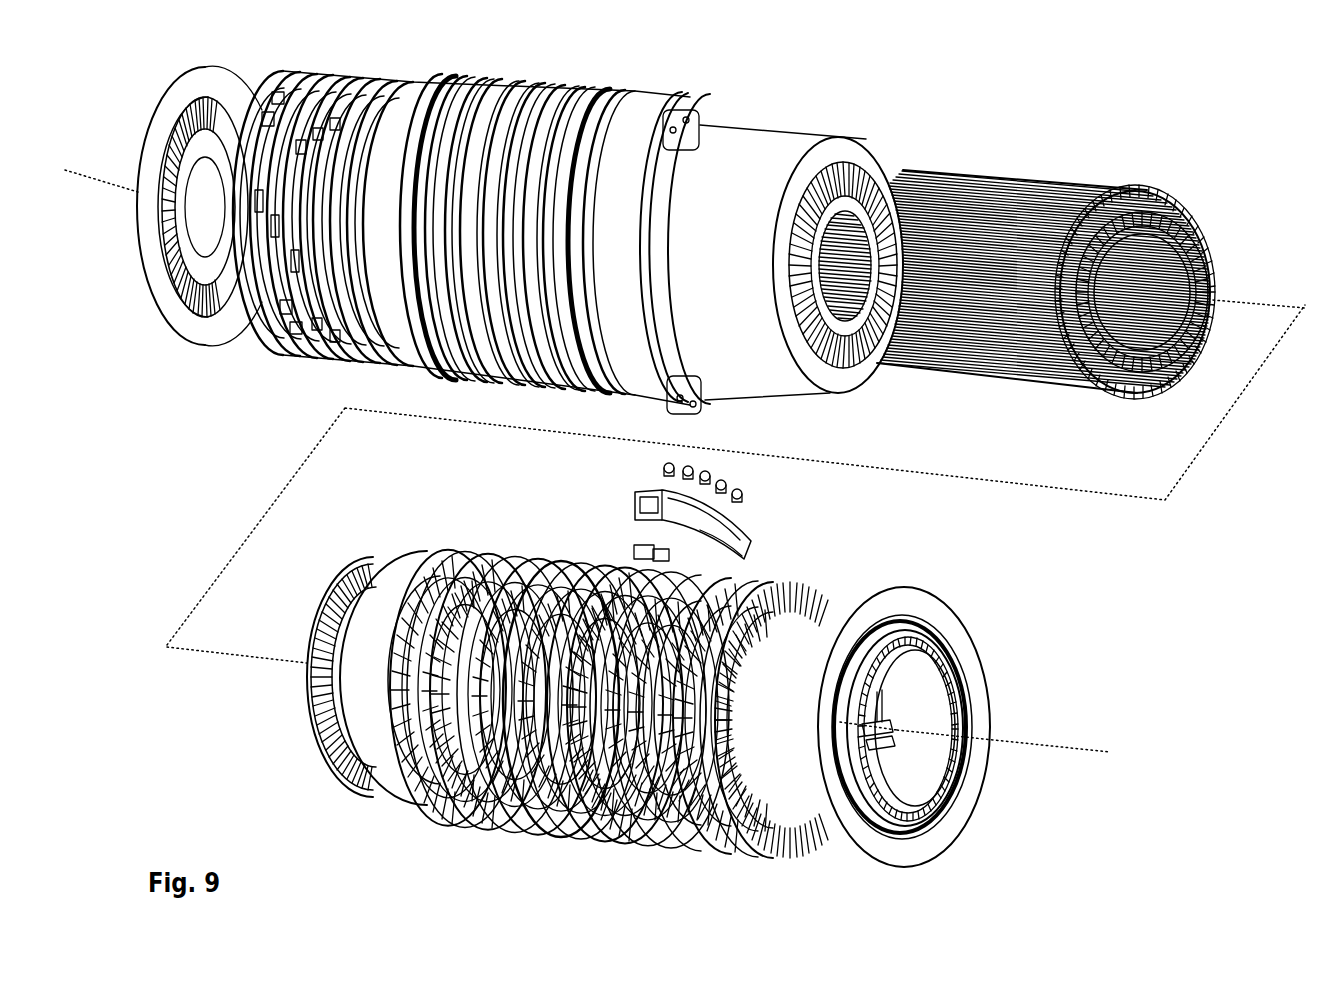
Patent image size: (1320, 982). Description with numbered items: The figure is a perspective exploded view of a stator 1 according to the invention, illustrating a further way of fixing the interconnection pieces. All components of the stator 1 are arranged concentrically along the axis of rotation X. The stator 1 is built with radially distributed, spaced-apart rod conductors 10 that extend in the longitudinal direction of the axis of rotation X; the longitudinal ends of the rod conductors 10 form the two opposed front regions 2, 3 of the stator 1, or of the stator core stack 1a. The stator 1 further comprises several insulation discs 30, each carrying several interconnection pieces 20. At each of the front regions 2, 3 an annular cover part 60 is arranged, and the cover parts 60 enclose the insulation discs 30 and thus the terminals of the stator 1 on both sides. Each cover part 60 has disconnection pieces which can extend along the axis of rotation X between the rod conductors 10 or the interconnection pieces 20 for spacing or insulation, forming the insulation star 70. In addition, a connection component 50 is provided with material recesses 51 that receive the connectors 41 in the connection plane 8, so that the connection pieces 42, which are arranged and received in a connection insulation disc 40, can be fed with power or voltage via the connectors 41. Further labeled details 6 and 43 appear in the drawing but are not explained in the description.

The stator 1 is at (98, 92).
The stator core stack 1a is at (800, 123).
The front region 2 is at (1123, 409).
The front region 3 is at (291, 375).
The friction pair 6 is at (420, 884).
The connection plane 8 is at (557, 876).
The rod conductors 10 is at (996, 163).
The interconnection pieces 20 is at (415, 798).
The insulation discs 30 is at (395, 752).
The connection insulation disc 40 is at (577, 572).
The connectors 41 is at (748, 493).
The connection pieces 42 is at (547, 788).
The spacer block 43 is at (633, 545).
The connection component 50 is at (748, 531).
The material recesses 51 is at (752, 553).
The annular cover part 60 is at (170, 286).
The insulation star 70 is at (188, 295).
The axis of rotation X is at (1236, 300).